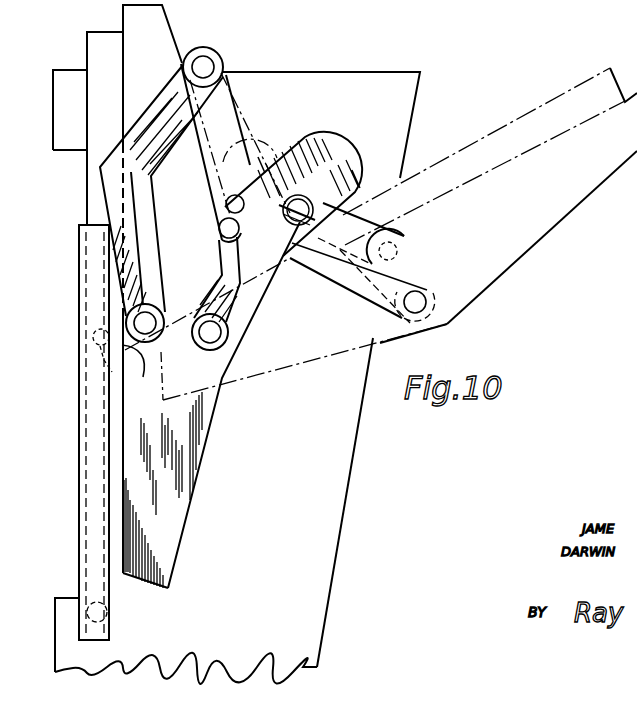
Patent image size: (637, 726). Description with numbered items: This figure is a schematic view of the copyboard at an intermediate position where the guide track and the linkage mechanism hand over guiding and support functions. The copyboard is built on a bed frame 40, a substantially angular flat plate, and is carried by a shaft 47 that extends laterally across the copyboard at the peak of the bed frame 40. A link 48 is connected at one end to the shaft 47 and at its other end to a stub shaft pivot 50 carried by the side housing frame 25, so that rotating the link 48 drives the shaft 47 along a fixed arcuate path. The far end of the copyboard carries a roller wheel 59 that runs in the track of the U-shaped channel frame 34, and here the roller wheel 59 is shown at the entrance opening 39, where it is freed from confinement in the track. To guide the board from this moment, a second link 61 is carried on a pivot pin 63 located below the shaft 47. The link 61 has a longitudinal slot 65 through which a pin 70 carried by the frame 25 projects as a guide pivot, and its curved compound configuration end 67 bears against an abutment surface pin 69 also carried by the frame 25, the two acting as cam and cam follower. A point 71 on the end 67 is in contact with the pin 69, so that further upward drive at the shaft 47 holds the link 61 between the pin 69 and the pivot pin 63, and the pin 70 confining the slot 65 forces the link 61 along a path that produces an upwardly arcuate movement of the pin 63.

The side housing frame 25 is at (236, 344).
The channel frame 34 is at (94, 240).
The opening 39 is at (135, 370).
The bed frame 40 is at (203, 457).
The shaft 47 is at (152, 322).
The link 48 is at (118, 167).
The stub shaft pivot 50 is at (207, 62).
The roller wheel 59 is at (108, 620).
The second link 61 is at (263, 290).
The pivot pin 63 is at (210, 336).
The slot 65 is at (350, 150).
The compound configuration end 67 is at (326, 133).
The abutment surface pin 69 is at (226, 236).
The pin 70 is at (289, 240).
The point 71 is at (225, 204).